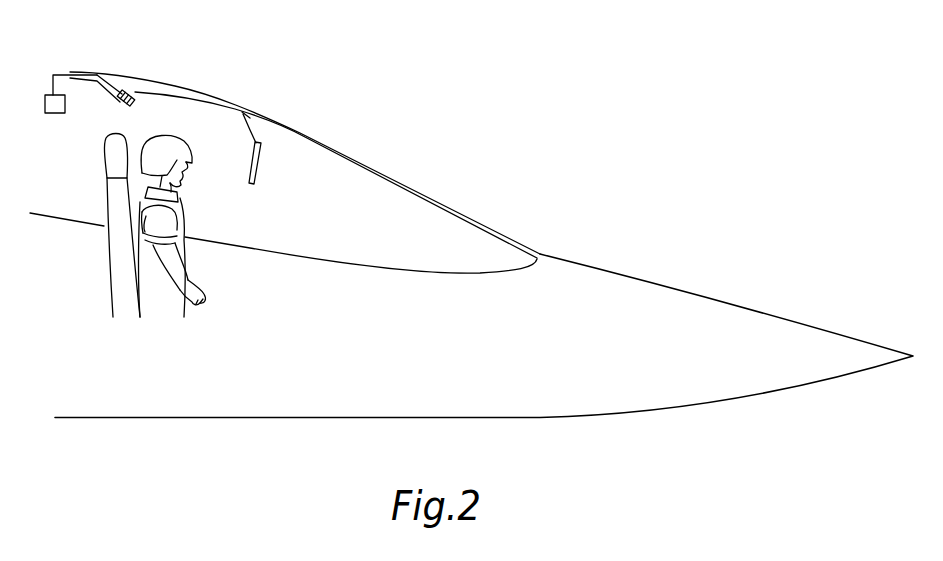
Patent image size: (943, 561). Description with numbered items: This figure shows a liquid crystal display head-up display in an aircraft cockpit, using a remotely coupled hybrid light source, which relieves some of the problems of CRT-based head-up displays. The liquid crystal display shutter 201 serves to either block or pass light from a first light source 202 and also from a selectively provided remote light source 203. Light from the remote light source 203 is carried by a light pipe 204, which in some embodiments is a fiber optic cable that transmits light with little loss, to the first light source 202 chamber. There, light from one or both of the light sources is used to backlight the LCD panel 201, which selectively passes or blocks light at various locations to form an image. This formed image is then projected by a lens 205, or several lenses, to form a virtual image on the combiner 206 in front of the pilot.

The liquid crystal display shutter 201 is at (143, 92).
The first light source 202 is at (118, 101).
The remote light source 203 is at (58, 113).
The light pipe 204 is at (70, 70).
The lens 205 is at (134, 101).
The combiner 206 is at (259, 167).